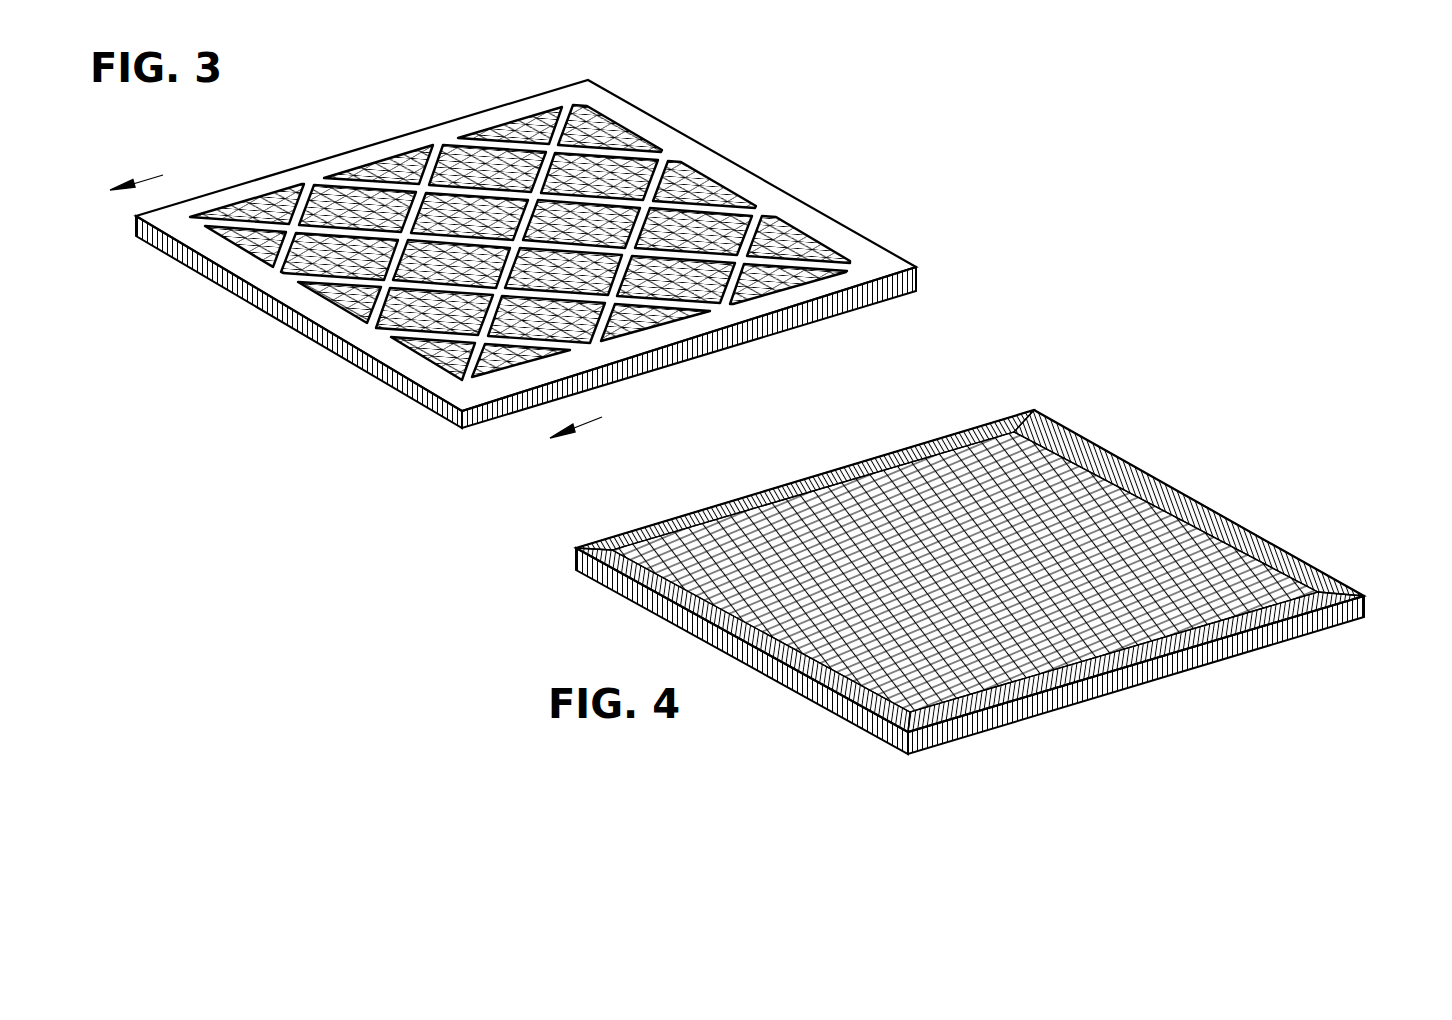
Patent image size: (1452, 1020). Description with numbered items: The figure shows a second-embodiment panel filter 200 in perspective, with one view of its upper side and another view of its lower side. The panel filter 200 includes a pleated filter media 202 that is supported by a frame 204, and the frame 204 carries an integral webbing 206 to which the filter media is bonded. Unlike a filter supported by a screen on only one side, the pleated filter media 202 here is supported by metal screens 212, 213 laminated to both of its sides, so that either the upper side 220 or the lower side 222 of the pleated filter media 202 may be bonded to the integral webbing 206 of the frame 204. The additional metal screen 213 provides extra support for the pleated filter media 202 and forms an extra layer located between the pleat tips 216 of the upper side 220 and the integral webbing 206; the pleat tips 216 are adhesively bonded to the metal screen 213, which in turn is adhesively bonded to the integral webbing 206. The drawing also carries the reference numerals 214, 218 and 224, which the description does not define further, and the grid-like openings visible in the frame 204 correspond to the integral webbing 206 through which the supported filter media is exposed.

In FIG. 3, the panel filter 200 is at (603, 246).
In FIG. 4, the panel filter 200 is at (1006, 584).
In FIG. 3, the pleated filter media 202 is at (512, 122).
In FIG. 4, the pleated filter media 202 is at (1018, 440).
In FIG. 3, the frame 204 is at (366, 371).
In FIG. 4, the frame 204 is at (948, 734).
In FIG. 3, the integral webbing 206 is at (766, 232).
In FIG. 4, the metal screen 212 is at (946, 460).
In FIG. 3, the metal screen 213 is at (648, 147).
In FIG. 3, the opening 214 is at (714, 171).
In FIG. 3, the pleat tips 216 is at (394, 167).
In FIG. 4, the mesh screen 218 is at (842, 498).
In FIG. 3, the upper side 220 is at (838, 236).
In FIG. 4, the lower side 222 is at (1282, 575).
In FIG. 3, the airflow direction 224 is at (213, 207).